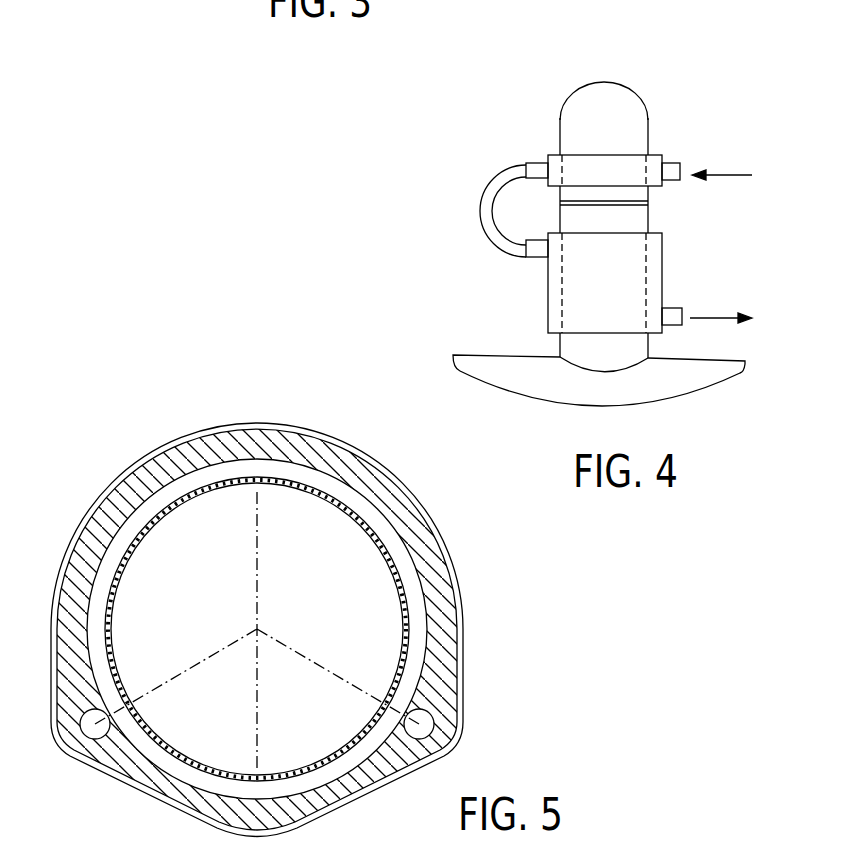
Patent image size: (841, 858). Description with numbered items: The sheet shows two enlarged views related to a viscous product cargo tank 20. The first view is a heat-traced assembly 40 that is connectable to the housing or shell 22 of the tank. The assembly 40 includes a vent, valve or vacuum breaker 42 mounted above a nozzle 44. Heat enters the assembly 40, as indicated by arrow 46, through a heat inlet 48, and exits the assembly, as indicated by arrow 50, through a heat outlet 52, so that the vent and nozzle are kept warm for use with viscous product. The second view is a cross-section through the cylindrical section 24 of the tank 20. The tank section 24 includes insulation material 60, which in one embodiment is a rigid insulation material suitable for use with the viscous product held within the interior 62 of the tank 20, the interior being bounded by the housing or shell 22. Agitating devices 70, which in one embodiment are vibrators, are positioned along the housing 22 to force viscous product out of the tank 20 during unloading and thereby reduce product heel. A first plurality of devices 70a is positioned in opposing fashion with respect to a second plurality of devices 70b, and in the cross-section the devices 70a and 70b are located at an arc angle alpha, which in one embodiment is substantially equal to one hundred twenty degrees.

In FIG. 4, the heat-traced assembly 40 is at (645, 78).
In FIG. 4, the vent, valve or vacuum breaker 42 is at (573, 117).
In FIG. 4, the nozzle 44 is at (635, 218).
In FIG. 4, the arrow 46 is at (725, 172).
In FIG. 4, the heat inlet 48 is at (680, 163).
In FIG. 4, the arrow 50 is at (718, 317).
In FIG. 4, the heat outlet 52 is at (676, 307).
In FIG. 4, the cylindrical section 24 is at (702, 390).
In FIG. 5, the cylindrical section 24 is at (112, 469).
In FIG. 5, the viscous product cargo tank 20 is at (257, 604).
In FIG. 5, the housing or shell 22 is at (362, 525).
In FIG. 5, the insulation material 60 is at (442, 643).
In FIG. 5, the interior 62 is at (380, 593).
In FIG. 5, the agitating devices 70 is at (300, 758).
In FIG. 5, the first plurality of devices 70a is at (82, 736).
In FIG. 5, the second plurality of devices 70b is at (420, 722).